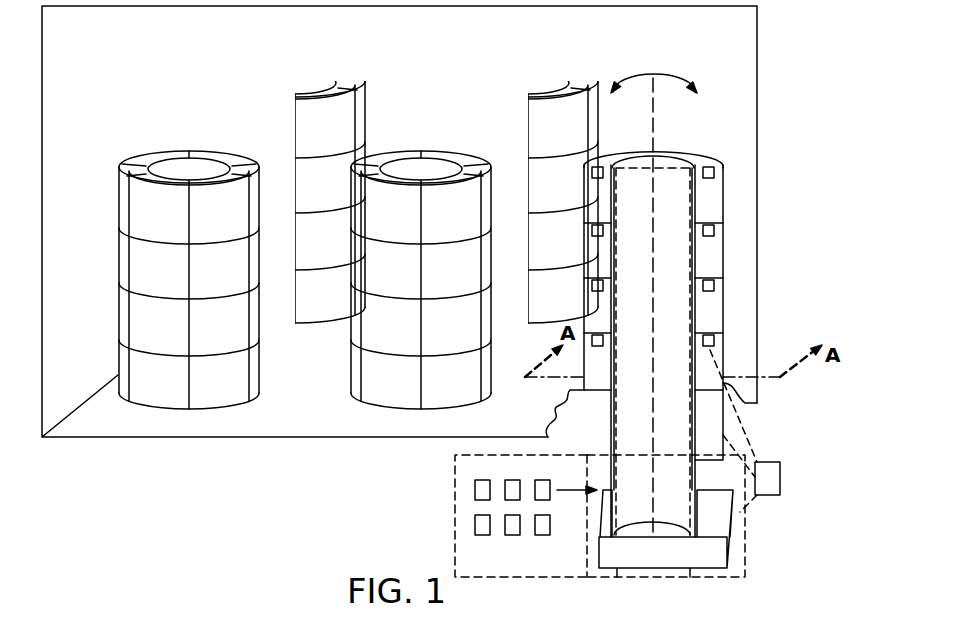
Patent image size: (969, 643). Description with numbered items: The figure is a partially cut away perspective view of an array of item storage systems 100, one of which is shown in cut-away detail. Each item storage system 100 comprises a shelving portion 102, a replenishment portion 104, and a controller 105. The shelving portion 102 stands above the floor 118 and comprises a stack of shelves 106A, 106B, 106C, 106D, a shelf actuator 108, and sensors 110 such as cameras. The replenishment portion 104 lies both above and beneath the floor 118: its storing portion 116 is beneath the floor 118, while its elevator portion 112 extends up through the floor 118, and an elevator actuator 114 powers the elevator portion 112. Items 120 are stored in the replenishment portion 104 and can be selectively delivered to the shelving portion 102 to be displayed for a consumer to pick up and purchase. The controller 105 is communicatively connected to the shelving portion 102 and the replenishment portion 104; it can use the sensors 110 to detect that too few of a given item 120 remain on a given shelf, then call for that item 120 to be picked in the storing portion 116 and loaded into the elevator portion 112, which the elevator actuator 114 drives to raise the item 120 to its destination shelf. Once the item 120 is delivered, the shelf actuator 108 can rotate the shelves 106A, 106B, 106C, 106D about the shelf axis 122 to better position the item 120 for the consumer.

The item storage system 100 is at (168, 146).
The shelving portion 102 is at (732, 200).
The replenishment portion 104 is at (752, 535).
The controller 105 is at (780, 478).
The shelf 106A is at (596, 392).
The shelf 106B is at (718, 333).
The shelf 106C is at (720, 282).
The shelf 106D is at (720, 222).
The shelf actuator 108 is at (713, 417).
The sensors 110 is at (716, 177).
The elevator portion 112 is at (587, 560).
The elevator actuator 114 is at (668, 568).
The storing portion 116 is at (455, 523).
The floor 118 is at (296, 423).
The items 120 is at (542, 480).
The shelf axis 122 is at (670, 87).